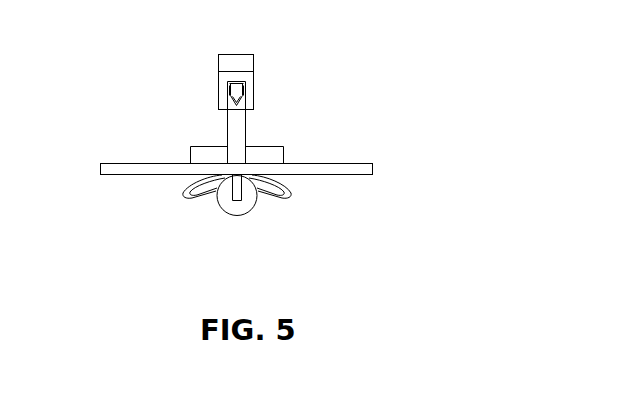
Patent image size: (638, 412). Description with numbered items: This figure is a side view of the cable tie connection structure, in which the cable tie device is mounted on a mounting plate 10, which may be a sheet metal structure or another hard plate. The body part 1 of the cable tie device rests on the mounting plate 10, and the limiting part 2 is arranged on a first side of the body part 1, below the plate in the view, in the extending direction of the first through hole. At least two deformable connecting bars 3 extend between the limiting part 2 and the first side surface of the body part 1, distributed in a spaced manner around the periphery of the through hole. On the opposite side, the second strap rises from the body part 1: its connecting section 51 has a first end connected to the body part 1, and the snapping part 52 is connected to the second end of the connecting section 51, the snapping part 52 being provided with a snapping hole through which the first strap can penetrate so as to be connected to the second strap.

The mounting plate 10 is at (328, 175).
The body part 1 is at (270, 151).
The connecting section 51 is at (233, 126).
The snapping part 52 is at (239, 76).
The limiting part 2 is at (238, 208).
The connecting bars 3 is at (187, 199).